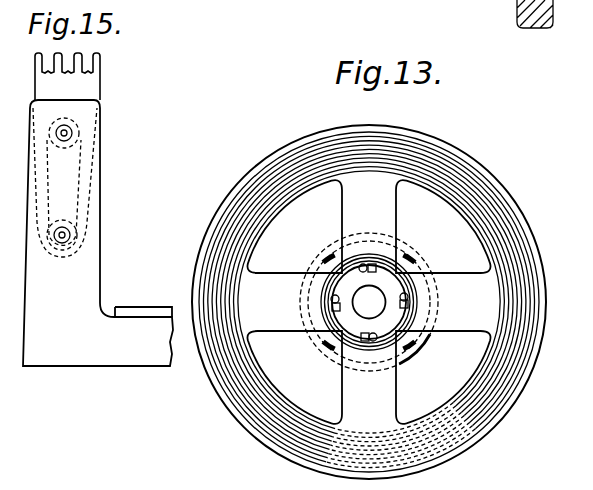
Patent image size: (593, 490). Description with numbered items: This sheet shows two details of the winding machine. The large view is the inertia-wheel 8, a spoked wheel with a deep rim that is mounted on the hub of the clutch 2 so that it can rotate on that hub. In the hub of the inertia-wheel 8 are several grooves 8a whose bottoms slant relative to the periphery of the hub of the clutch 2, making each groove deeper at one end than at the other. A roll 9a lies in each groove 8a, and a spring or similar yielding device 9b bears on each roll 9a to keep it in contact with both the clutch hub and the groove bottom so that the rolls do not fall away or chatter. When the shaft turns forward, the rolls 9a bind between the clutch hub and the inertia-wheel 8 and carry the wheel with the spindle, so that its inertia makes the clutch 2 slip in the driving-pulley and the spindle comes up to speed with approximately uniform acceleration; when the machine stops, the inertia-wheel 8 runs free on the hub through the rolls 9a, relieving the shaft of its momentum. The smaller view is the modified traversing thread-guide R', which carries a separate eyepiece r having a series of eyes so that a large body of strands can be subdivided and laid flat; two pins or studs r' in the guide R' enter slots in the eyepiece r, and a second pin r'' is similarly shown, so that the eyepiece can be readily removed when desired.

In FIG. 15, the eyepiece r is at (78, 76).
In FIG. 15, the pin or stud r' is at (62, 250).
In FIG. 15, the upper pin r'' is at (64, 146).
In FIG. 15, the traversing thread-guide R' is at (98, 233).
In FIG. 13, the inertia-wheel 8 is at (369, 302).
In FIG. 13, the clutch 2 is at (422, 266).
In FIG. 13, the roll 9a is at (369, 344).
In FIG. 13, the spring 9b is at (333, 306).
In FIG. 13, the groove 8a is at (413, 330).